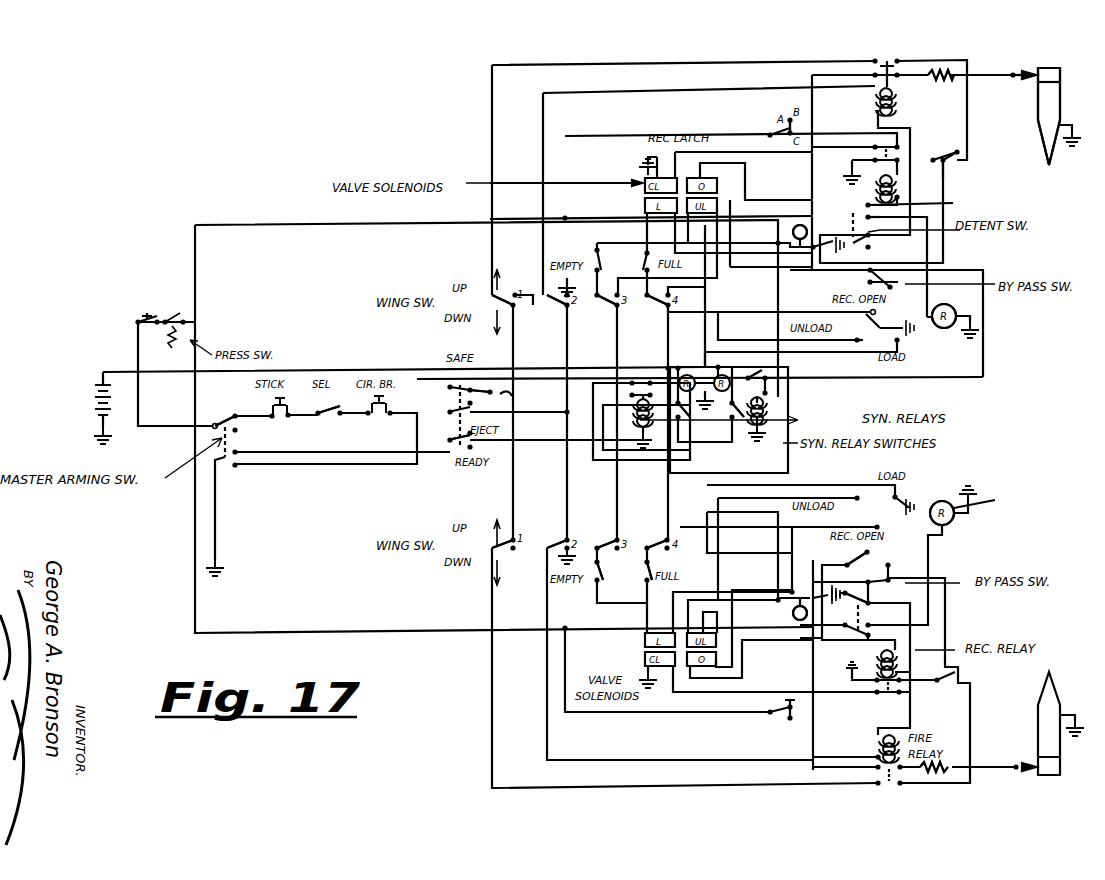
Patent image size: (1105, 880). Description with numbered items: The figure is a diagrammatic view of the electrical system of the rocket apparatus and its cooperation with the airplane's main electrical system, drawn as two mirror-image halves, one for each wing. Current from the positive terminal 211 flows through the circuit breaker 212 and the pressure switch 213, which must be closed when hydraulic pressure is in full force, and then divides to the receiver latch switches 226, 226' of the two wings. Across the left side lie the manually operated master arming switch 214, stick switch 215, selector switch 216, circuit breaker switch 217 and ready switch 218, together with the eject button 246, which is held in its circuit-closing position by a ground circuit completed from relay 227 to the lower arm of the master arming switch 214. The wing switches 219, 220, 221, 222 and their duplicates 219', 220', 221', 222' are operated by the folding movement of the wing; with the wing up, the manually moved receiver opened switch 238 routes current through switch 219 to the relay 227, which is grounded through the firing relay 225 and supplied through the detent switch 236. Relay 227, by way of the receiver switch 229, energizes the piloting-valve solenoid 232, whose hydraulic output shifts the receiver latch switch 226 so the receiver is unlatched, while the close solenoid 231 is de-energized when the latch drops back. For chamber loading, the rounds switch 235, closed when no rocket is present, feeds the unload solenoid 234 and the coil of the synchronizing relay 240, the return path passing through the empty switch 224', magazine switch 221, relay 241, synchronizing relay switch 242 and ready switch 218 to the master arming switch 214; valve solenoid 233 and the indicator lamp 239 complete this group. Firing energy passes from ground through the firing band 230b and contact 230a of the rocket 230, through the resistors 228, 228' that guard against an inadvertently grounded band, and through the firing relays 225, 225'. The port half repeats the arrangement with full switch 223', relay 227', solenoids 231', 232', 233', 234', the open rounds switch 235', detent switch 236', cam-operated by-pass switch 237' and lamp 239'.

The positive terminal 211 is at (93, 385).
The circuit breaker 212 is at (138, 318).
The pressure switch 213 is at (182, 312).
The master arming switch 214 is at (236, 432).
The stick switch 215 is at (280, 422).
The selector switch 216 is at (325, 420).
The circuit breaker switch 217 is at (372, 420).
The ready switch 218 is at (445, 448).
The wing switch 219 is at (520, 316).
The wing switch contact 220 is at (567, 316).
The magazine switch 221 is at (619, 316).
The wing switch contact 222 is at (669, 316).
The firing relay 225 is at (909, 102).
The receiver latch switch 226 is at (752, 117).
The relay 227 is at (911, 142).
The resistor 228 is at (952, 59).
The receiver switch 229 is at (958, 163).
The rocket 230 is at (1038, 112).
The rocket contact 230a is at (1030, 70).
The firing band 230b is at (1038, 84).
The close solenoid 231 is at (640, 171).
The piloting-valve solenoid 232 is at (733, 173).
The valve solenoid 233 is at (637, 203).
The unload solenoid 234 is at (733, 198).
The rounds switch 235 is at (819, 233).
The detent switch 236 is at (924, 207).
The receiver opened switch 238 is at (871, 347).
The indicator lamp 239 is at (949, 308).
The synchronizing relay 240 is at (770, 412).
The synchronizing relay 241 is at (633, 428).
The synchronizing relay switch 242 is at (735, 428).
The eject button 246 is at (505, 398).
The wing switch 219' is at (511, 562).
The wing switch contact 220' is at (573, 530).
The magazine switch 221' is at (616, 563).
The wing switch contact 222' is at (702, 557).
The full switch 223' is at (686, 574).
The empty switch 224' is at (579, 591).
The firing relay 225' is at (857, 769).
The receiver latch switch 226' is at (756, 720).
The relay 227' is at (911, 693).
The resistor 228' is at (953, 782).
The close solenoid 231' is at (666, 691).
The piloting-valve solenoid 232' is at (728, 673).
The valve solenoid 233' is at (625, 638).
The unload solenoid 234' is at (701, 624).
The rounds switch 235' is at (786, 633).
The detent switch 236' is at (930, 606).
The by-pass switch 237' is at (936, 551).
The indicator lamp 239' is at (977, 513).